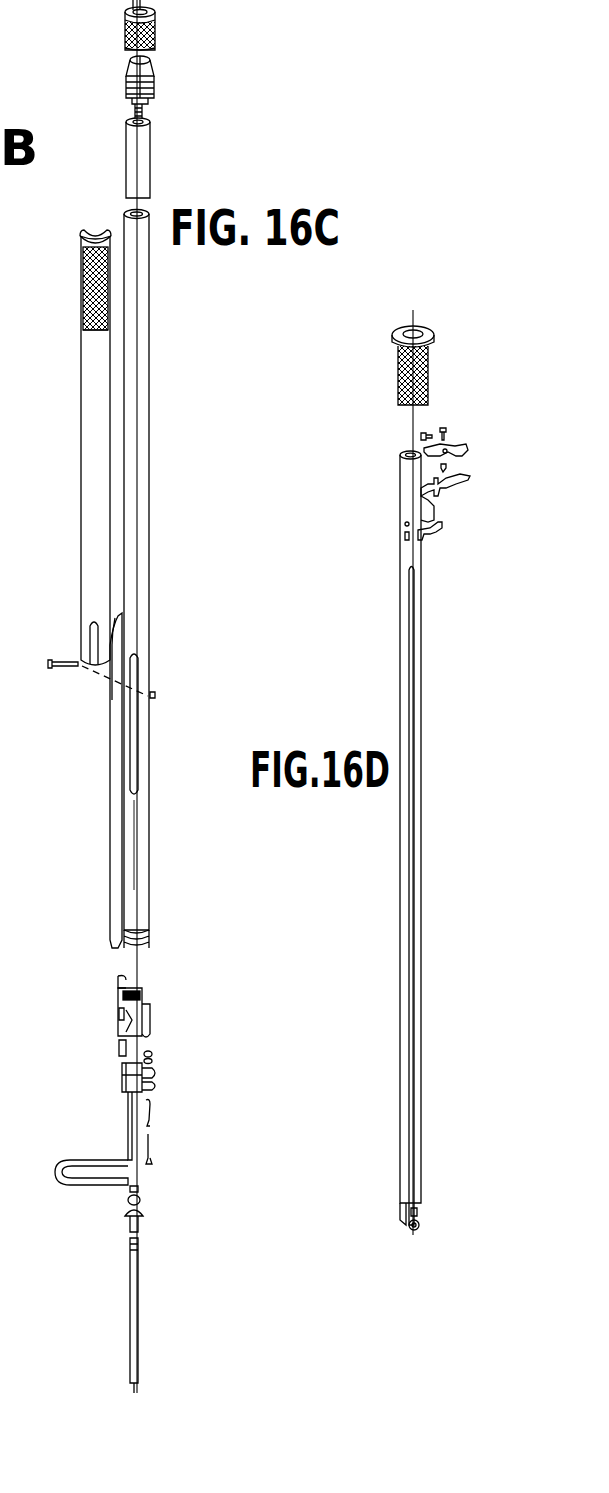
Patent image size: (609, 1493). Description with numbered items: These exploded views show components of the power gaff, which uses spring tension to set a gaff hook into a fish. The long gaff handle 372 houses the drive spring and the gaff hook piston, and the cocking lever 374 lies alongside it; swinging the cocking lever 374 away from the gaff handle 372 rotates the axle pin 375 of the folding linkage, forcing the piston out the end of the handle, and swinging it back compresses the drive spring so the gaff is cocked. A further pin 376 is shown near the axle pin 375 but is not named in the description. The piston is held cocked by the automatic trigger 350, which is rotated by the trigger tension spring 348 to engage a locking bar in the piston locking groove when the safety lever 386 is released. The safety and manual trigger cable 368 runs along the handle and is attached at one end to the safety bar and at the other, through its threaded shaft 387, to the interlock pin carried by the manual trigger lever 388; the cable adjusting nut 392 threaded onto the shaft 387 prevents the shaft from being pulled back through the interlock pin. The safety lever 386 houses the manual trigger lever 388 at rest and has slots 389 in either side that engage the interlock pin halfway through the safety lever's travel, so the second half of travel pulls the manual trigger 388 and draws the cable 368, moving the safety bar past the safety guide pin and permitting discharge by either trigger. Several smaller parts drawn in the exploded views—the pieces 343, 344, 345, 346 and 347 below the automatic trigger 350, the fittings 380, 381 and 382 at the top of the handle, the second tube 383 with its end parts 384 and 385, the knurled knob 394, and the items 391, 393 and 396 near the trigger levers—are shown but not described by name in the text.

In FIG. 16C, the rod 343 is at (140, 1246).
In FIG. 16C, the dome cap 344 is at (144, 1214).
In FIG. 16C, the stem 345 is at (128, 1224).
In FIG. 16C, the ball 346 is at (141, 1200).
In FIG. 16C, the collar 347 is at (140, 1188).
In FIG. 16C, the trigger tension spring 348 is at (152, 1106).
In FIG. 16C, the automatic trigger 350 is at (86, 1160).
In FIG. 16C, the safety and manual trigger cable 368 is at (110, 914).
In FIG. 16C, the gaff handle 372 is at (150, 502).
In FIG. 16C, the cocking lever 374 is at (92, 498).
In FIG. 16C, the axle pin 375 is at (62, 658).
In FIG. 16C, the pin 376 is at (157, 693).
In FIG. 16C, the collet 380 is at (153, 82).
In FIG. 16C, the knurled knob 381 is at (122, 28).
In FIG. 16C, the spring pin 382 is at (146, 108).
In FIG. 16D, the tube 383 is at (420, 836).
In FIG. 16D, the roller 384 is at (420, 1224).
In FIG. 16D, the roller pin 385 is at (418, 1212).
In FIG. 16D, the safety lever 386 is at (440, 490).
In FIG. 16D, the threaded shaft 387 is at (442, 528).
In FIG. 16D, the manual trigger lever 388 is at (462, 454).
In FIG. 16D, the safety lever slots 389 is at (420, 490).
In FIG. 16D, the screw 391 is at (428, 432).
In FIG. 16D, the cable adjusting nut 392 is at (448, 432).
In FIG. 16D, the slot 393 is at (404, 536).
In FIG. 16D, the knurled knob 394 is at (430, 366).
In FIG. 16D, the pin 396 is at (452, 468).